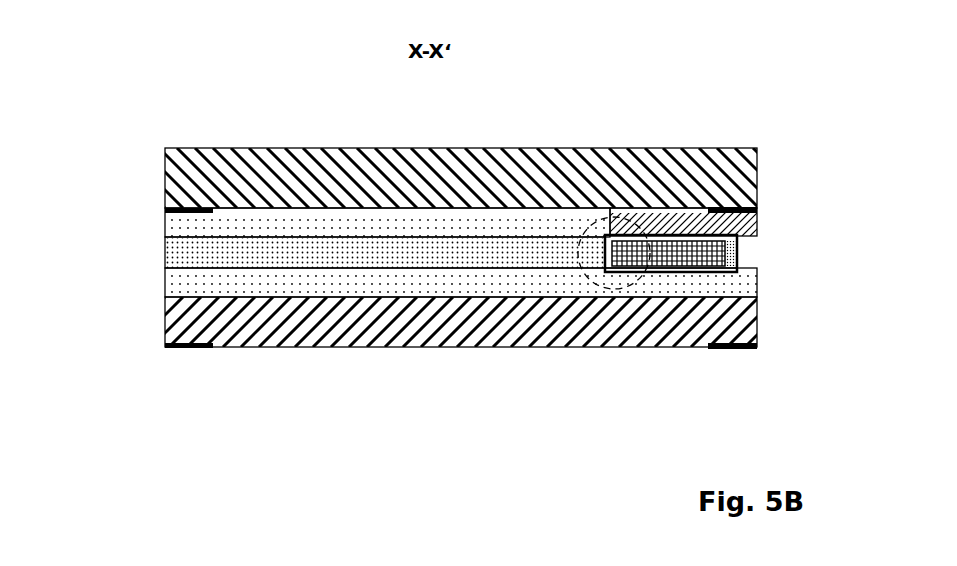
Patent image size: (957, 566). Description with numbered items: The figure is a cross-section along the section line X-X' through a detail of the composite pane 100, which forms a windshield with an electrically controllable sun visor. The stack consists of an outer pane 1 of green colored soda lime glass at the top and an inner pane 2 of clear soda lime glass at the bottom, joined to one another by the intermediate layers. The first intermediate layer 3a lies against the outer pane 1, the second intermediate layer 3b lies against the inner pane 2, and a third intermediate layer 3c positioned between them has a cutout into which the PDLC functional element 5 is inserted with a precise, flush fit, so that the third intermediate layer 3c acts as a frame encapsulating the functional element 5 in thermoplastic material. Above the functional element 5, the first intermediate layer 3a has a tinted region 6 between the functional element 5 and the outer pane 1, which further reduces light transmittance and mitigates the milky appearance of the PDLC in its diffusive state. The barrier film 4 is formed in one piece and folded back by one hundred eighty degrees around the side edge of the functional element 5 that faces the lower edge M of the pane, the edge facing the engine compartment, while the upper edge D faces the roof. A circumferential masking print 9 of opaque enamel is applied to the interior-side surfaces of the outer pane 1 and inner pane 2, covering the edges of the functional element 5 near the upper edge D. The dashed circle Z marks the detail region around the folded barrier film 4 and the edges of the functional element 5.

The composite pane 100 is at (210, 83).
The outer pane 1 is at (177, 148).
The inner pane 2 is at (242, 347).
The first intermediate layer 3a is at (173, 227).
The second intermediate layer 3b is at (743, 284).
The third intermediate layer 3c is at (190, 251).
The barrier film 4 is at (740, 243).
The functional element 5 is at (740, 269).
The tinted region 6 is at (745, 229).
The masking print 9 is at (756, 209).
The lower edge M is at (164, 164).
The upper edge D is at (759, 167).
The detail region Z is at (631, 282).